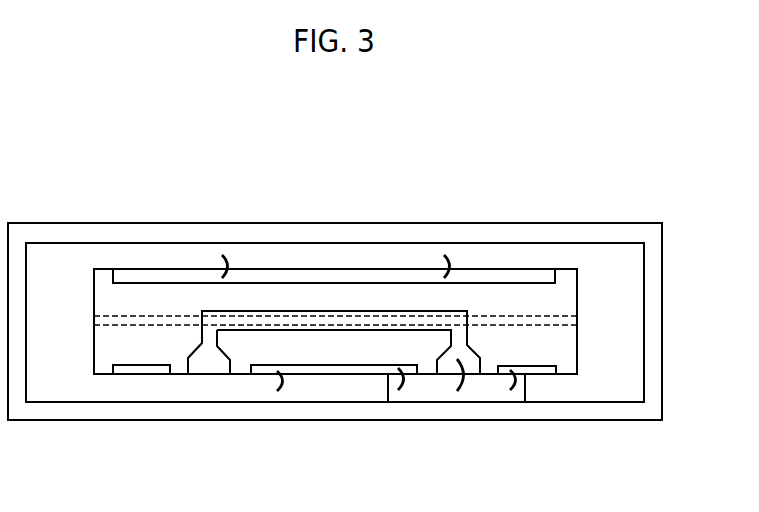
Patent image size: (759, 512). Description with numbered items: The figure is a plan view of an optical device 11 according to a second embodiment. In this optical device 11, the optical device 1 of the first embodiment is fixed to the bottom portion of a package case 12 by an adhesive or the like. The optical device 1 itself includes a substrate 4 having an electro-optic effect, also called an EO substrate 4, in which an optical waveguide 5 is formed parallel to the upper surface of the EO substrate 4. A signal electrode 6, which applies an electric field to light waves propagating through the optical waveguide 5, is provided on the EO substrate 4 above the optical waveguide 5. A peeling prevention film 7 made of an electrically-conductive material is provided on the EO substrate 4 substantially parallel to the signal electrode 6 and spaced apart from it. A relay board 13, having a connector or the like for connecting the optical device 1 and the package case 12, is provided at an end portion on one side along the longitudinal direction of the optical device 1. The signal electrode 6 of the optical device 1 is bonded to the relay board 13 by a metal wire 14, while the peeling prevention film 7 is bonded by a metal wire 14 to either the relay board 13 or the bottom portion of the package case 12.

The optical device 1 is at (528, 266).
The substrate having an electro-optic effect 4 is at (563, 293).
The optical waveguide 5 is at (547, 316).
The signal electrode 6 is at (292, 315).
The peeling prevention film 7 is at (138, 366).
The optical device 11 is at (629, 199).
The package case 12 is at (656, 246).
The relay board 13 is at (494, 390).
The metal wire 14 is at (236, 250).